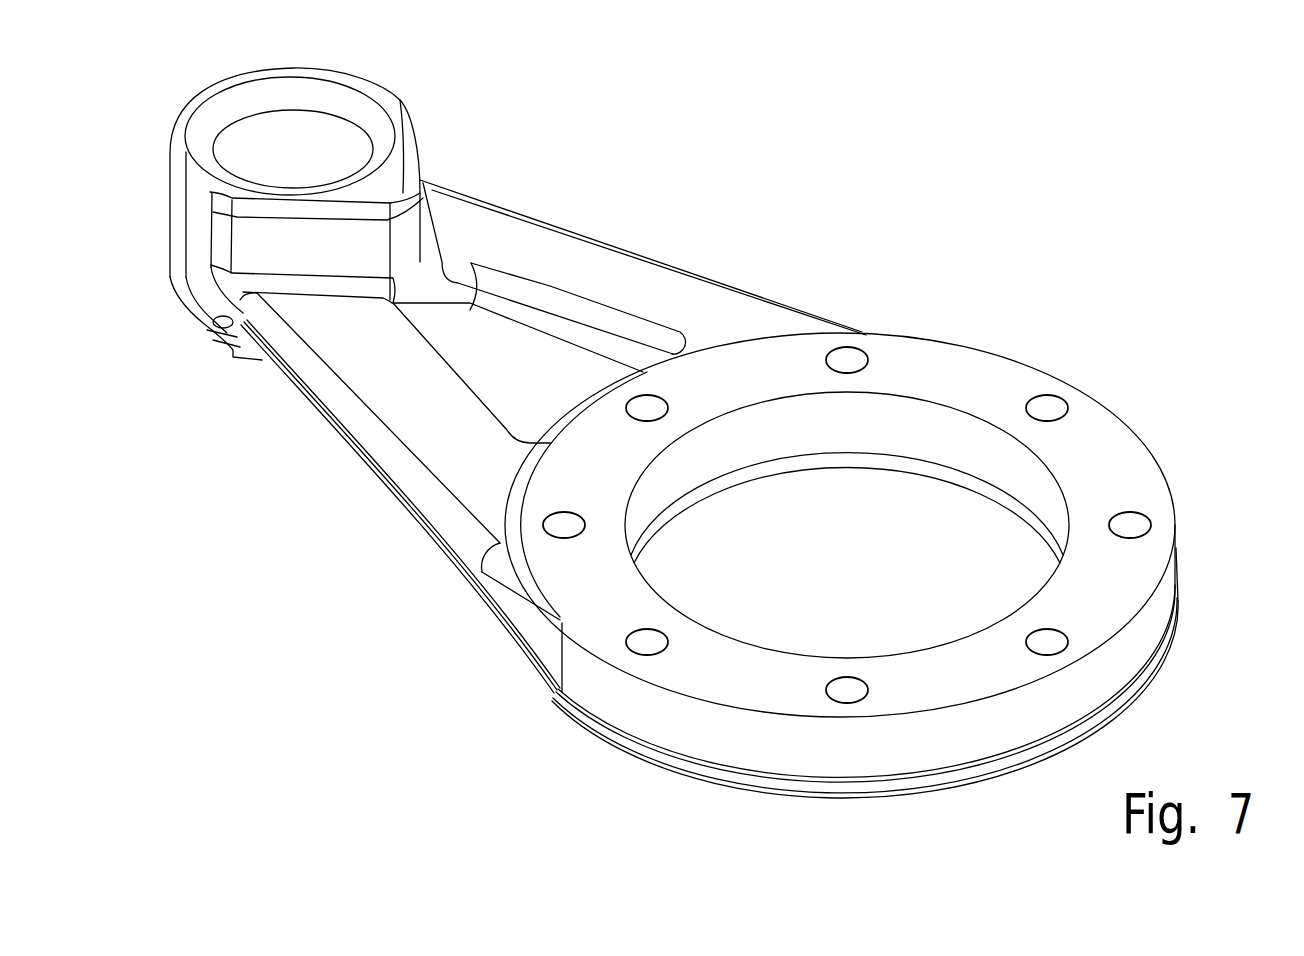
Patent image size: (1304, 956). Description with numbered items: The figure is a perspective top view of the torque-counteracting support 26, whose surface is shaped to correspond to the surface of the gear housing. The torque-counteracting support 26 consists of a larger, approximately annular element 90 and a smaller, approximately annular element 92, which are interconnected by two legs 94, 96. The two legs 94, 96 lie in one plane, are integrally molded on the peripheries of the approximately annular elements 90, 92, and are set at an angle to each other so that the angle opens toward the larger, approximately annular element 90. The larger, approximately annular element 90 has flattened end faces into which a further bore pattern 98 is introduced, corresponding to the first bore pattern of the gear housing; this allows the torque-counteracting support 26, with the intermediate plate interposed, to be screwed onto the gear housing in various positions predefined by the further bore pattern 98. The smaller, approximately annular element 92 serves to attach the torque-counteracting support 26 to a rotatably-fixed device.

The torque-counteracting support 26 is at (722, 409).
The larger approximately annular element 90 is at (985, 378).
The smaller approximately annular element 92 is at (387, 101).
The leg 94 is at (575, 268).
The leg 96 is at (380, 378).
The further bore pattern 98 is at (1132, 527).